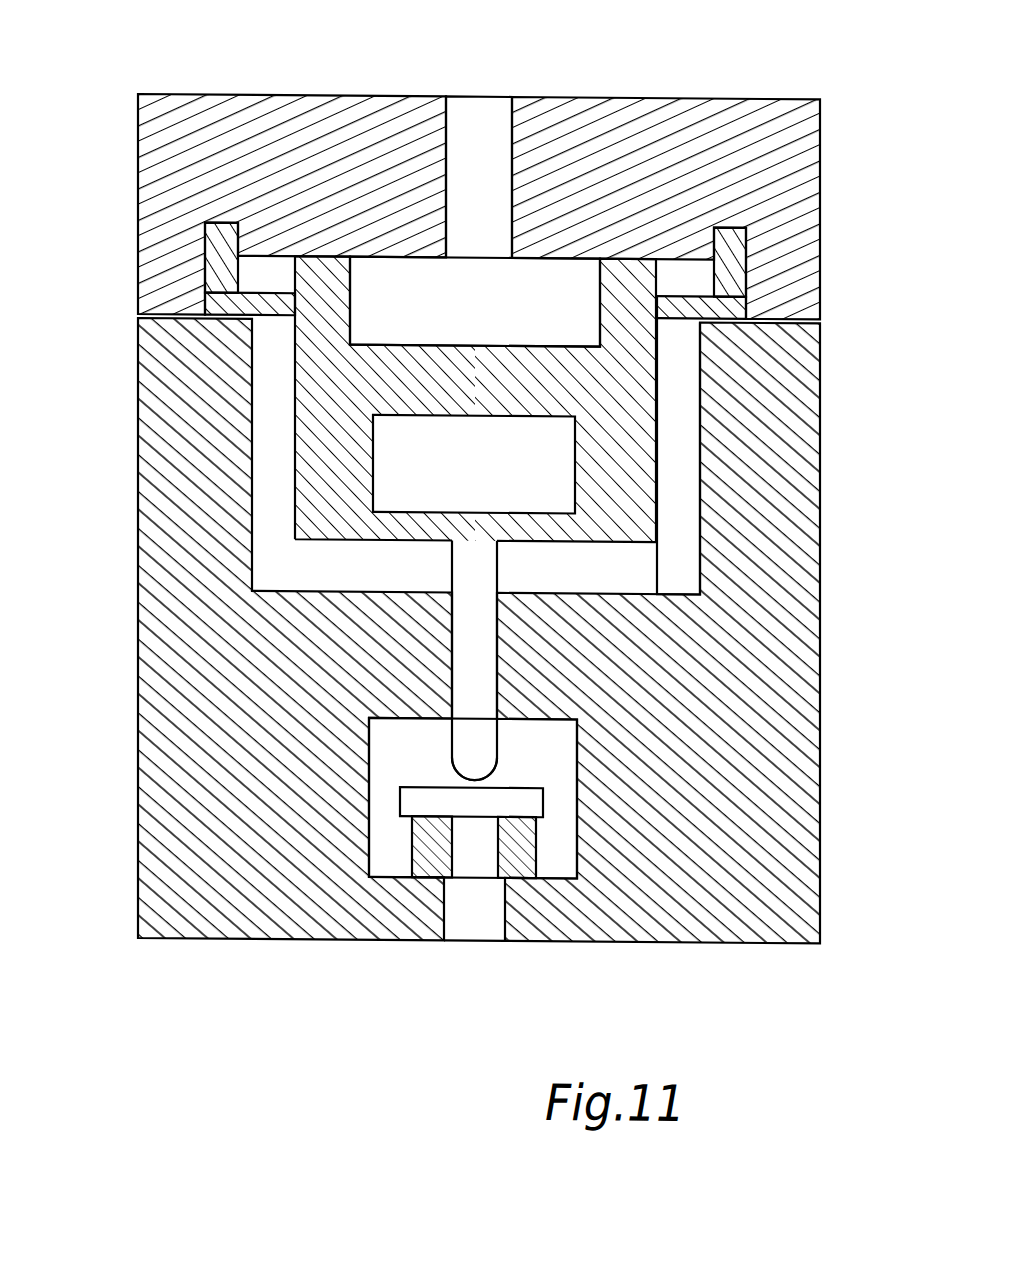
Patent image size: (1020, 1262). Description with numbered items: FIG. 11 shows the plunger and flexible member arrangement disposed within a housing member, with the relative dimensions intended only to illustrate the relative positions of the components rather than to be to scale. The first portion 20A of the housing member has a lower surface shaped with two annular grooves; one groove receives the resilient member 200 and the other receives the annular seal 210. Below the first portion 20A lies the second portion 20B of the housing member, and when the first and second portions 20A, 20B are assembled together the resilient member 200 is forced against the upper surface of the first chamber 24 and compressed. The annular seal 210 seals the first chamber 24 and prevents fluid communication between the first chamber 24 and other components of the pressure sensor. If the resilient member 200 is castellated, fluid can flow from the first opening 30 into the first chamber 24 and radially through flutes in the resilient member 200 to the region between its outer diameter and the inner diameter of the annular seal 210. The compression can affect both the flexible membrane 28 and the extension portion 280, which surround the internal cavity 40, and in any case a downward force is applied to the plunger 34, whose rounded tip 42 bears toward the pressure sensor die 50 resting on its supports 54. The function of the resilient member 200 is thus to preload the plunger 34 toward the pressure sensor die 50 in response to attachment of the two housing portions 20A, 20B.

The first portion of the housing member 20A is at (178, 172).
The lower mold block 20B is at (240, 876).
The resilient member 200 is at (222, 240).
The annular seal 210 is at (728, 245).
The first opening 30 is at (478, 125).
The first chamber 24 is at (556, 275).
The flexible membrane 28 is at (318, 512).
The extension portion 280 is at (680, 316).
The inner cavity 40 is at (542, 457).
The plunger 34 is at (470, 719).
The rounded stem tip 42 is at (470, 769).
The pressure sensor die 50 is at (418, 800).
The support blocks 54 is at (527, 835).